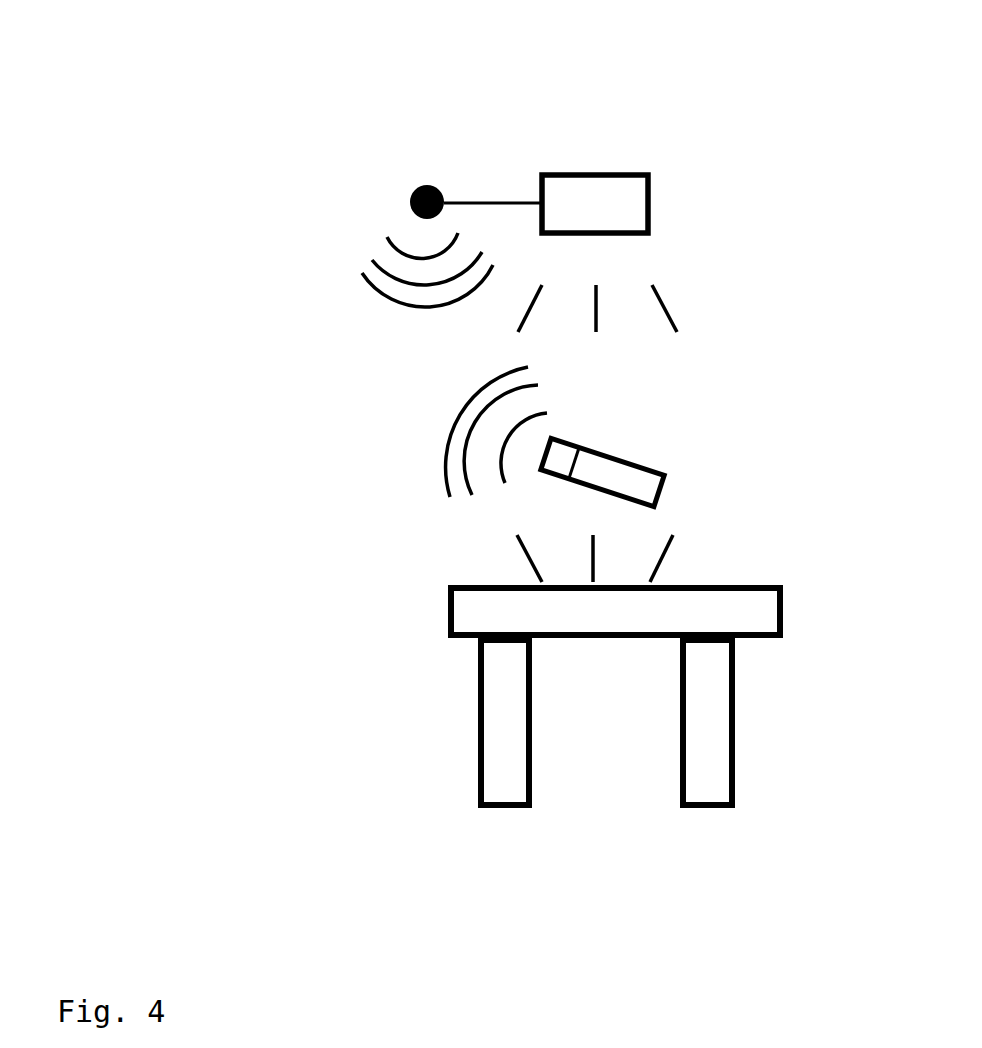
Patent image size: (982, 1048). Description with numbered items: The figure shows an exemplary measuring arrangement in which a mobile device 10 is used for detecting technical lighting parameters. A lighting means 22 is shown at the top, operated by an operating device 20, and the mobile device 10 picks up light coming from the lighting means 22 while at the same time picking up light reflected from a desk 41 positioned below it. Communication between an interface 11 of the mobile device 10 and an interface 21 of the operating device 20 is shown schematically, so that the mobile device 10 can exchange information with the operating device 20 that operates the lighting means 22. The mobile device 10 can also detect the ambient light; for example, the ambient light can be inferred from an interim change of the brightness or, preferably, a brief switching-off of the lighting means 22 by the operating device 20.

The mobile device 10 is at (640, 486).
The interface 11 is at (563, 460).
The operating device 20 is at (680, 201).
The interface 21 is at (427, 186).
The lighting means 22 is at (590, 214).
The desk 41 is at (630, 785).